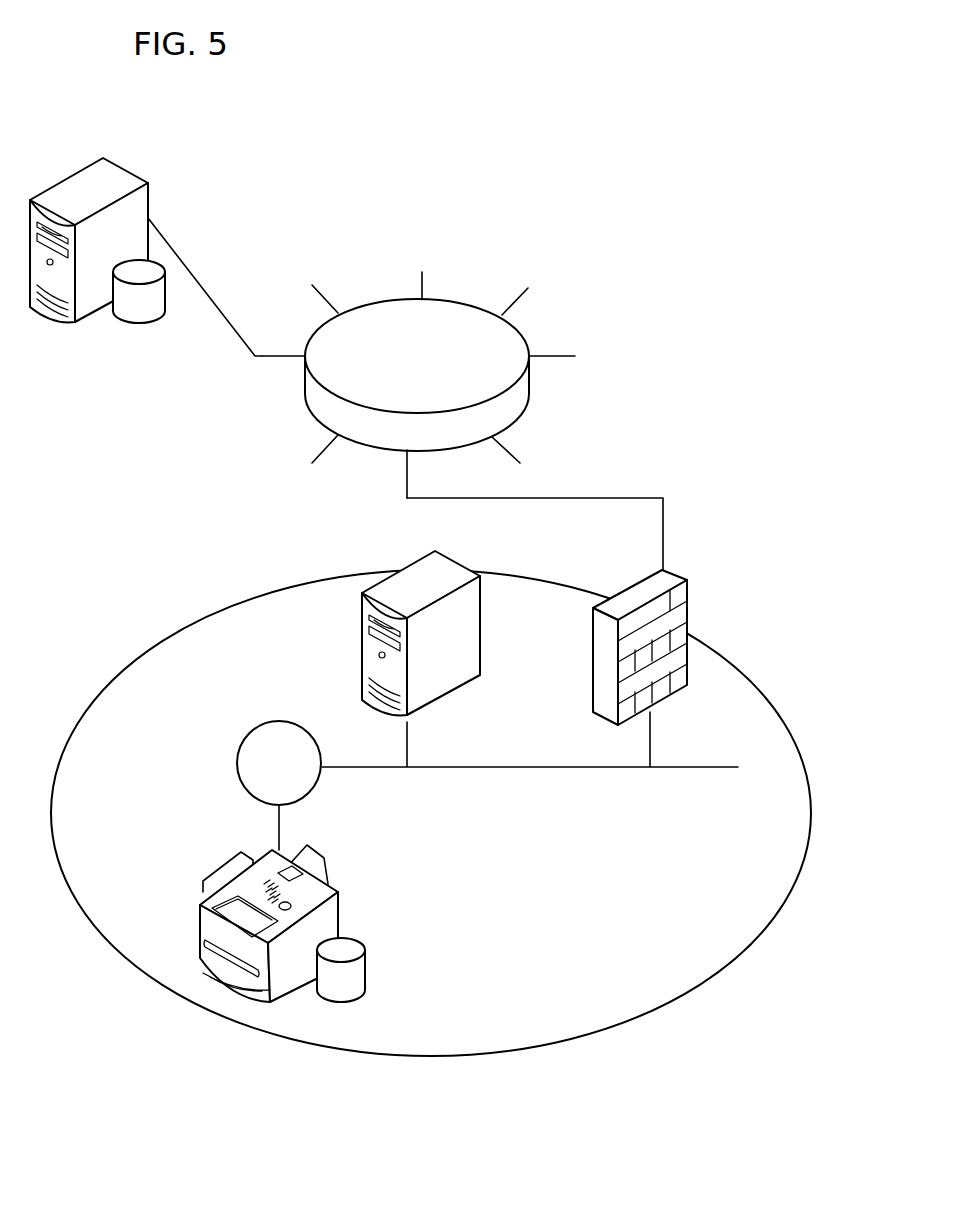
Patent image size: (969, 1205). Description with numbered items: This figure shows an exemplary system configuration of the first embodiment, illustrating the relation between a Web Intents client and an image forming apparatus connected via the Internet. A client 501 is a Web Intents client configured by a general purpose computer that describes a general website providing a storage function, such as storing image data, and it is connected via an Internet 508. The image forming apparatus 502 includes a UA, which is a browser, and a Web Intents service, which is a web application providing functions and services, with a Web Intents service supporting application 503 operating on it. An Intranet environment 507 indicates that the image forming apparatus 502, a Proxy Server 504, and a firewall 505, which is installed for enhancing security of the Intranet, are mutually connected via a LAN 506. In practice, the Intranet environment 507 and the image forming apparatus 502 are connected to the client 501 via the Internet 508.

The client 501 is at (173, 183).
The image forming apparatus 502 is at (365, 897).
The Web Intents service supporting application 503 is at (385, 967).
The Proxy Server 504 is at (473, 538).
The firewall 505 is at (687, 580).
The LAN 506 is at (277, 721).
The Intranet environment 507 is at (772, 705).
The Internet 508 is at (472, 282).